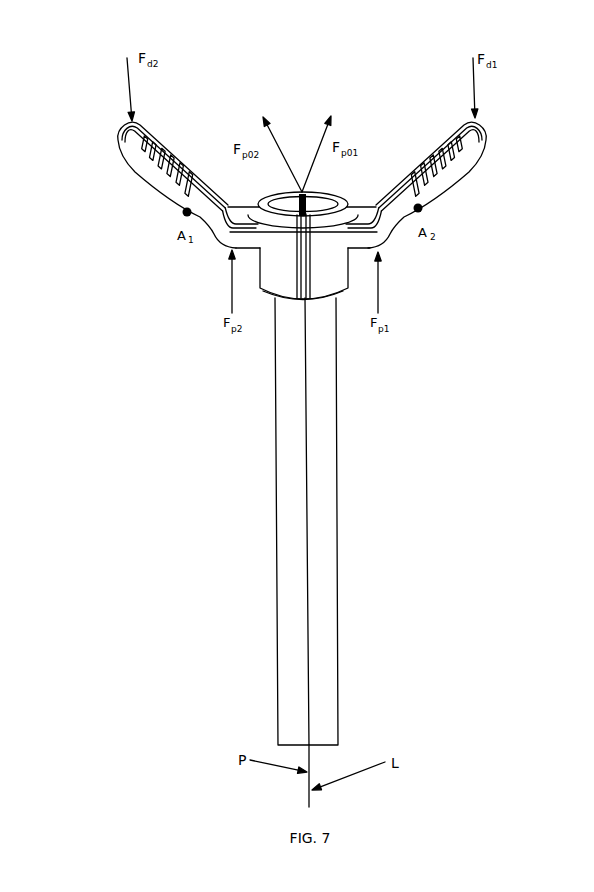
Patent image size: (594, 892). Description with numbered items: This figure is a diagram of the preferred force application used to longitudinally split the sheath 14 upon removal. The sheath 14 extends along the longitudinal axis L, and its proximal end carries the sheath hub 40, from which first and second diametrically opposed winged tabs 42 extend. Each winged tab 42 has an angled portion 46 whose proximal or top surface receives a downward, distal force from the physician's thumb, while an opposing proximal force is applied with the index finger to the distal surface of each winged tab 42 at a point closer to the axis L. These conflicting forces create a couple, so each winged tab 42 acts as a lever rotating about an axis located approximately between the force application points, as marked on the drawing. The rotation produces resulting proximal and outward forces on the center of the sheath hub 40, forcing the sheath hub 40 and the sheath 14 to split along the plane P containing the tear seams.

The sheath 14 is at (346, 568).
The sheath hub 40 is at (354, 295).
The winged tabs 42 is at (162, 216).
The angled portion 46 is at (122, 180).